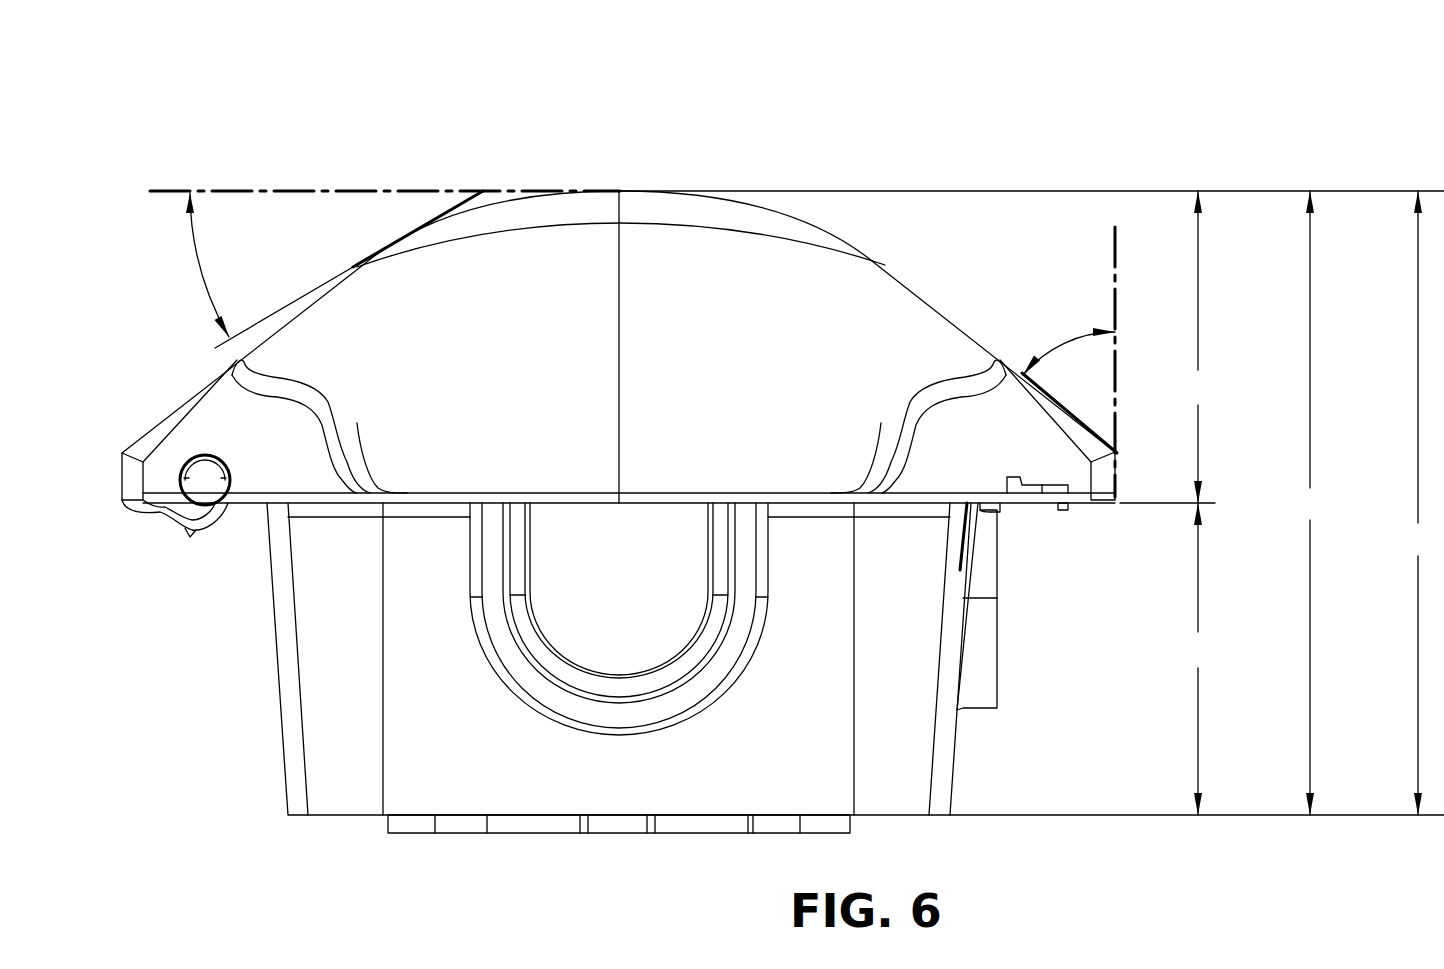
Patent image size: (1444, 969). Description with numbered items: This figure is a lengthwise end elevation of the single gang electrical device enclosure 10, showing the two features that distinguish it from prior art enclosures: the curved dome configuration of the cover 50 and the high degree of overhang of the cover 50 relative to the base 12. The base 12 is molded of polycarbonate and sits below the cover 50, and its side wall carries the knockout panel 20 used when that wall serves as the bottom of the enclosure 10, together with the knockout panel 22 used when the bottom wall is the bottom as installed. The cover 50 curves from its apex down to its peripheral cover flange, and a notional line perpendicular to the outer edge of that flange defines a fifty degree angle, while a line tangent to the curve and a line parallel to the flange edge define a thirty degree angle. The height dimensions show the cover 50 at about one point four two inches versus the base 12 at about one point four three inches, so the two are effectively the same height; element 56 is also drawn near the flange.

The single gang electrical device enclosure 10 is at (468, 100).
The base 12 is at (228, 721).
The knockout panel 20 is at (985, 677).
The knockout panel 22 is at (627, 660).
The cover 50 is at (697, 172).
The hinge pin 56 is at (203, 475).